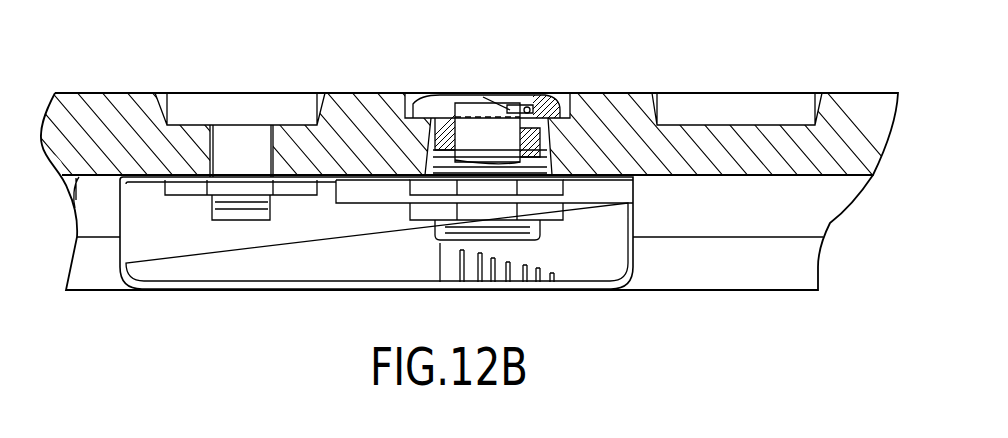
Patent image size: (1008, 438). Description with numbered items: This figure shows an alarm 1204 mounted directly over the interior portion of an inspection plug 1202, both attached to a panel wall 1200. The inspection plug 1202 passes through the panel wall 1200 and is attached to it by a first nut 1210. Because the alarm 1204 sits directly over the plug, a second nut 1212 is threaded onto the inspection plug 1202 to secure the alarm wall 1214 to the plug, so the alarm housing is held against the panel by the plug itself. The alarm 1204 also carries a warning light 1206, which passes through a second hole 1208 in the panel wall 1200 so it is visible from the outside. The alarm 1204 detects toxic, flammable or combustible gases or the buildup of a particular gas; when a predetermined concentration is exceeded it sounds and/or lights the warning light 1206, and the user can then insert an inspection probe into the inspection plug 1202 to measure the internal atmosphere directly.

The panel wall 1200 is at (677, 137).
The inspection plug 1202 is at (520, 103).
The alarm 1204 is at (252, 265).
The warning light 1206 is at (197, 110).
The second hole 1208 is at (303, 153).
The first nut 1210 is at (570, 178).
The second nut 1212 is at (572, 212).
The alarm wall 1214 is at (142, 183).